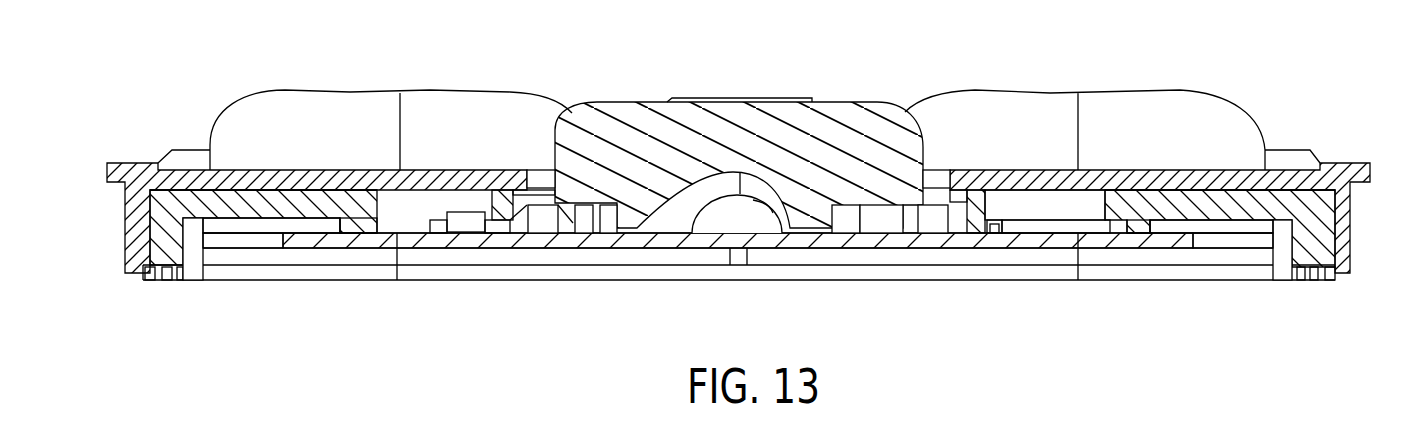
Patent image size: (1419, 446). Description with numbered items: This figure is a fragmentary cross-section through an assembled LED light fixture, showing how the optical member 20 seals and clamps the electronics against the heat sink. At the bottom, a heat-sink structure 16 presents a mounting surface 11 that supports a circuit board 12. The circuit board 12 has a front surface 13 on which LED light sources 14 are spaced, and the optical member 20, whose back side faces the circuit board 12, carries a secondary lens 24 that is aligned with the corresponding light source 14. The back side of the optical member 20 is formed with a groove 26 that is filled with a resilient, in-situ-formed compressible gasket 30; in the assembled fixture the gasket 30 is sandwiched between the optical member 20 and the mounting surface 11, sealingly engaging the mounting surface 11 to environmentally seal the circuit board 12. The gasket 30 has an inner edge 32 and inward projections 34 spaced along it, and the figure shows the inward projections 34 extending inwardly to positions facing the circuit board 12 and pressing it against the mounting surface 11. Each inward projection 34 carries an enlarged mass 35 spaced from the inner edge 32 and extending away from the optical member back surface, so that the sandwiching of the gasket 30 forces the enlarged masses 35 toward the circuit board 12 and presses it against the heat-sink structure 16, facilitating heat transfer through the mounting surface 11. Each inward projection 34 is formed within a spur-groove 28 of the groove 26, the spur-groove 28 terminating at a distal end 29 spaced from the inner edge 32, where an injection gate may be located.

The mounting surface 11 is at (833, 228).
The circuit board 12 is at (556, 236).
The front surface 13 is at (424, 230).
The LED light source 14 is at (757, 233).
The heat-sink structure 16 is at (1002, 272).
The optical member 20 is at (185, 167).
The secondary lens 24 is at (628, 117).
The groove 26 is at (162, 226).
The spur-groove 28 is at (278, 200).
The distal end 29 is at (1123, 197).
The in-situ-formed compressible gasket 30 is at (1320, 233).
The inner edge 32 is at (192, 250).
The inward projection 34 is at (252, 213).
The enlarged mass 35 is at (360, 215).